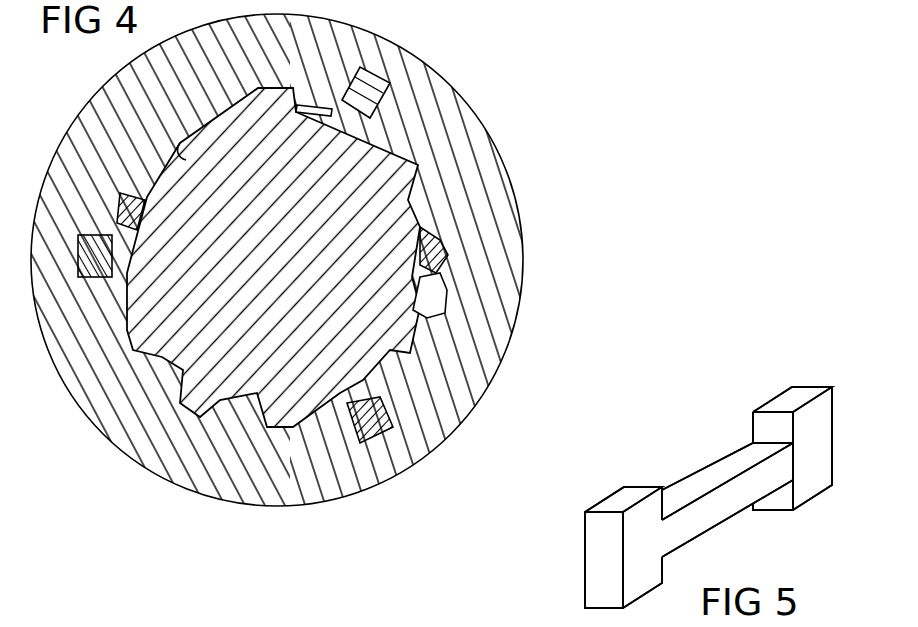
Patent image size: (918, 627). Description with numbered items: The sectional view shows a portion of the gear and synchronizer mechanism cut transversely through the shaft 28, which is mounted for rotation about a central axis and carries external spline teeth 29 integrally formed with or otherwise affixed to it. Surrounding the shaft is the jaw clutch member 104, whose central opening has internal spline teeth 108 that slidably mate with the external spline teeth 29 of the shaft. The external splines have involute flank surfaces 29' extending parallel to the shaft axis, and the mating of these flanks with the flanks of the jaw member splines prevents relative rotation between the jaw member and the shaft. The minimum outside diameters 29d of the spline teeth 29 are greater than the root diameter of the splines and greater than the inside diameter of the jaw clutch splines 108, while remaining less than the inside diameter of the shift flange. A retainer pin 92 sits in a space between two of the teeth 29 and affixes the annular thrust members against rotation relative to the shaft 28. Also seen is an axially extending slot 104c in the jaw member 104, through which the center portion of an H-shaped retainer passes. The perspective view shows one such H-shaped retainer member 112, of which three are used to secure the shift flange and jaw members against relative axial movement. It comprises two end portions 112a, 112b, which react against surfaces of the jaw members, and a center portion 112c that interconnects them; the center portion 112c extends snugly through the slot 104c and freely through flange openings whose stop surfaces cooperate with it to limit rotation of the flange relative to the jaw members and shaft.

In FIG. 4, the jaw clutch member 104 is at (305, 520).
In FIG. 4, the axially extending slot 104c is at (378, 102).
In FIG. 4, the spline teeth 29 is at (310, 257).
In FIG. 4, the involute flank surfaces 29' is at (252, 82).
In FIG. 4, the minimum outside diameters 29d is at (118, 283).
In FIG. 4, the shaft 28 is at (172, 143).
In FIG. 4, the retainer pin 92 is at (120, 205).
In FIG. 4, the internal spline teeth 108 is at (438, 294).
In FIG. 5, the H-shaped retainer member 112 is at (590, 487).
In FIG. 5, the end portion 112a is at (593, 540).
In FIG. 5, the end portion 112b is at (790, 398).
In FIG. 5, the center portion 112c is at (717, 478).